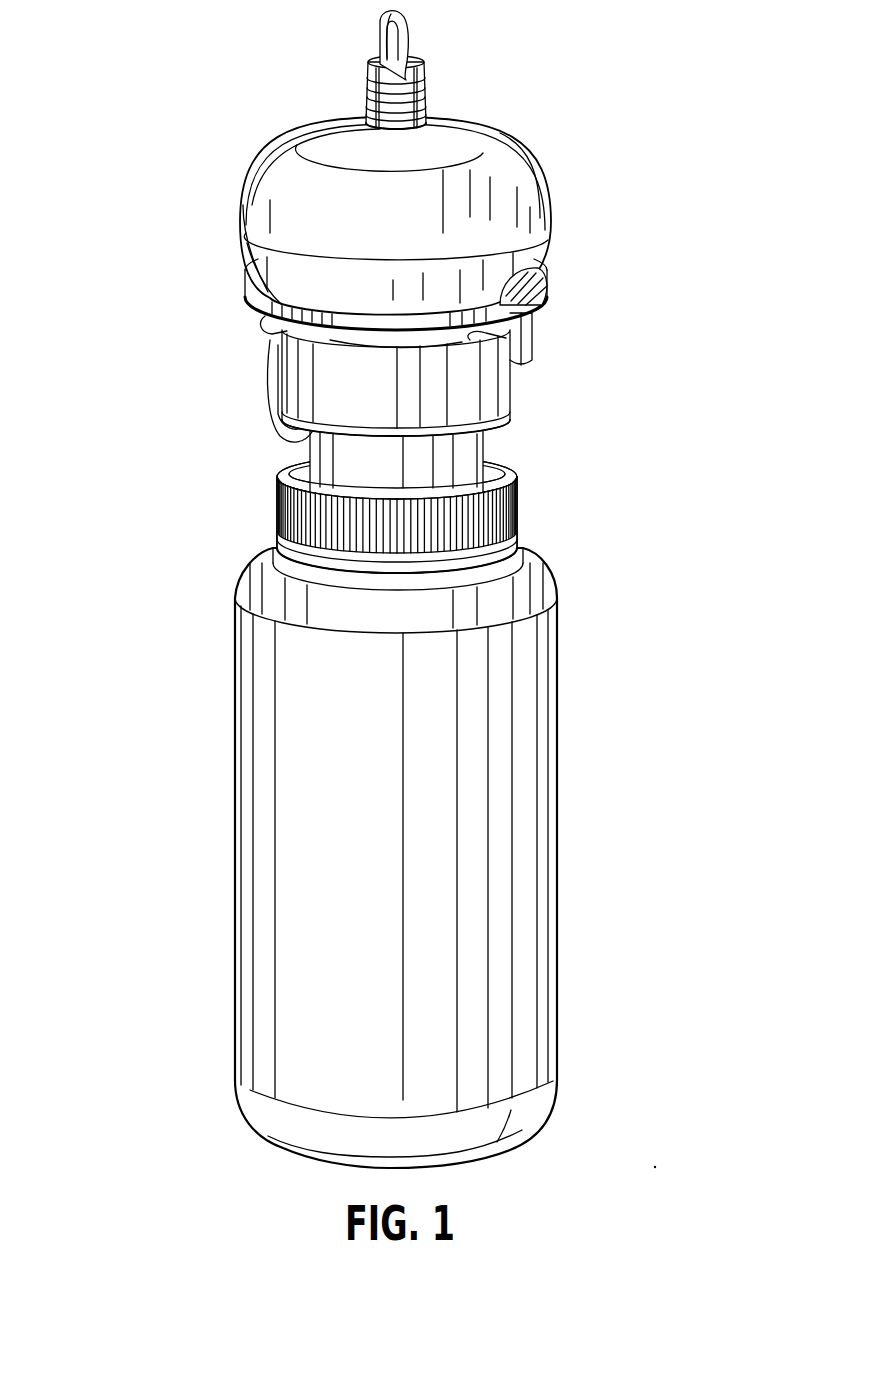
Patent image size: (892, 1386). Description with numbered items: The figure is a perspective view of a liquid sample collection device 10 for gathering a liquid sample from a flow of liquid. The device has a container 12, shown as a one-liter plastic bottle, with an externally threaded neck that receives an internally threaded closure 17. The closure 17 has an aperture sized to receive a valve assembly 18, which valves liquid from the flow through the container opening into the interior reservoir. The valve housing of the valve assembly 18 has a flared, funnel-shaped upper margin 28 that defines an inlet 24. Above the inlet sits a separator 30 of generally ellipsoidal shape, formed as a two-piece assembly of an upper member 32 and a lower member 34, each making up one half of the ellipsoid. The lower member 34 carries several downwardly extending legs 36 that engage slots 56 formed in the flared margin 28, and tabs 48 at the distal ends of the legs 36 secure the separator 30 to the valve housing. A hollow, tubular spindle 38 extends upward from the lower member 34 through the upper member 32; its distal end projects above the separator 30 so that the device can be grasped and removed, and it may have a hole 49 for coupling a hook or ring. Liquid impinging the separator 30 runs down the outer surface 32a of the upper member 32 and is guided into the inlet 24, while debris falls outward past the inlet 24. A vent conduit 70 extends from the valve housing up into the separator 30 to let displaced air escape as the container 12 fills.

The liquid sample collection device 10 is at (110, 58).
The container 12 is at (383, 972).
The closure 17 is at (278, 506).
The valve assembly 18 is at (550, 276).
The inlet 24 is at (386, 316).
The flared, funnel-shaped upper margin 28 is at (352, 343).
The separator 30 is at (386, 199).
The upper member 32 is at (480, 126).
The outer surface 32a is at (268, 188).
The lower member 34 is at (242, 247).
The legs 36 is at (243, 290).
The spindle 38 is at (408, 44).
The tabs 48 is at (266, 328).
The hole 49 is at (385, 32).
The slots 56 is at (280, 350).
The conduit 70 is at (277, 413).